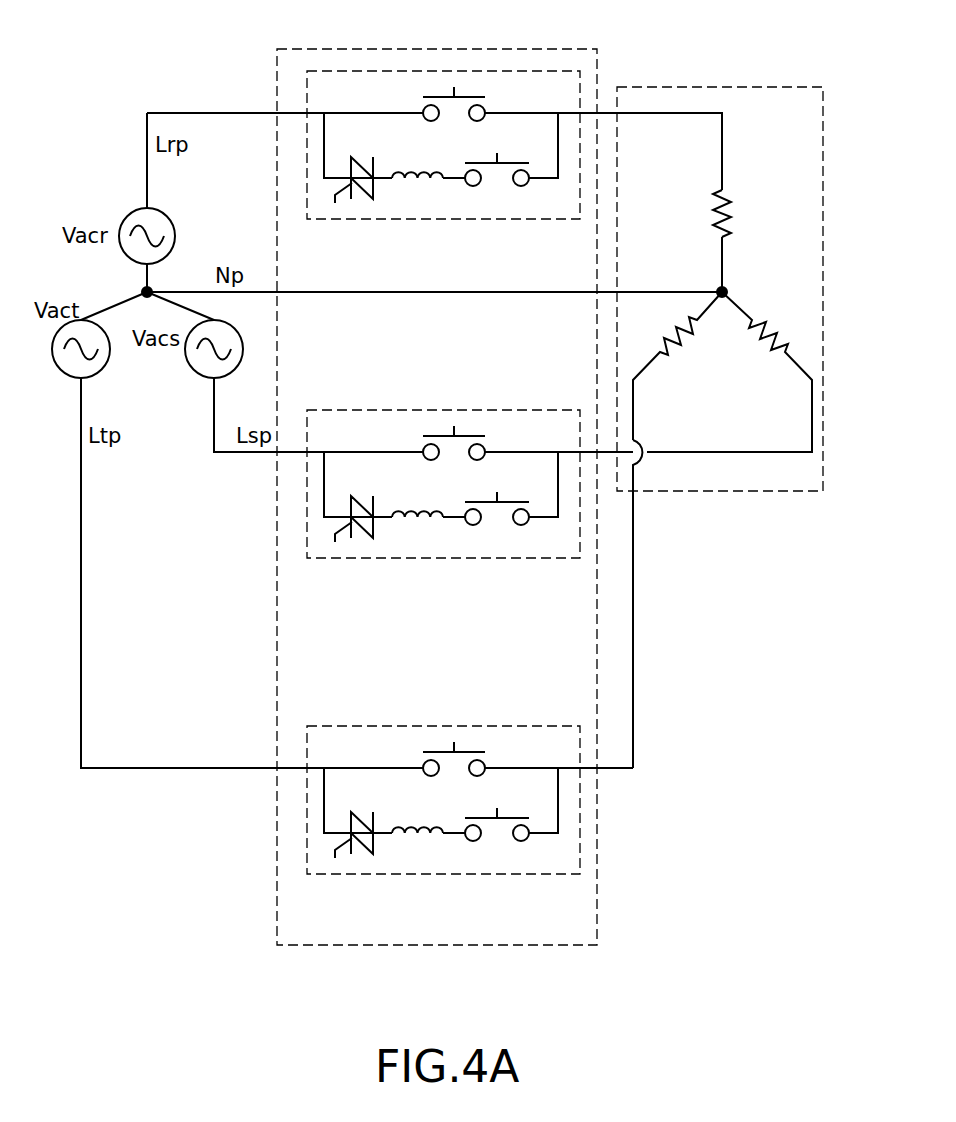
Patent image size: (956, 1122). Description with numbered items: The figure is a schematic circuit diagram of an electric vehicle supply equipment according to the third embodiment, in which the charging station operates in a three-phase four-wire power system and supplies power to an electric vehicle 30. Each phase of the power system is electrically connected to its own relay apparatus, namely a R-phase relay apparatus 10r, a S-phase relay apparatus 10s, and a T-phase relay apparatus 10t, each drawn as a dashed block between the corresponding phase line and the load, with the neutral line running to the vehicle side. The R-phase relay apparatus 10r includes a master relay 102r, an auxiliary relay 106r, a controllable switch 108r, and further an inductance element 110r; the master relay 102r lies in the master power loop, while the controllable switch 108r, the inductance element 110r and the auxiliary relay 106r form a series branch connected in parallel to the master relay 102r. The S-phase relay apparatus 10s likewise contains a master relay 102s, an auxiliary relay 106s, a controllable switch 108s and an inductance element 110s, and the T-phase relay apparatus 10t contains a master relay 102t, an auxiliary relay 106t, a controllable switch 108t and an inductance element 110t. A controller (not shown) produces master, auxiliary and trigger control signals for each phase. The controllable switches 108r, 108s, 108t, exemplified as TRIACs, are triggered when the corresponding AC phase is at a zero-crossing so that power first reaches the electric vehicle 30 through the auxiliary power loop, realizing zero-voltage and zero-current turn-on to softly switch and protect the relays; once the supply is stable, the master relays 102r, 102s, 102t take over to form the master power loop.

The R-phase relay apparatus 10r is at (370, 88).
The S-phase relay apparatus 10s is at (383, 427).
The T-phase relay apparatus 10t is at (383, 740).
The master relay 102r is at (467, 92).
The master relay 102s is at (467, 430).
The master relay 102t is at (467, 745).
The auxiliary relay 106r is at (498, 191).
The auxiliary relay 106s is at (498, 530).
The auxiliary relay 106t is at (498, 846).
The controllable switch 108r is at (329, 189).
The controllable switch 108s is at (329, 528).
The controllable switch 108t is at (329, 844).
The inductance element 110r is at (423, 184).
The inductance element 110s is at (423, 523).
The inductance element 110t is at (423, 839).
The electric vehicle 30 is at (764, 107).